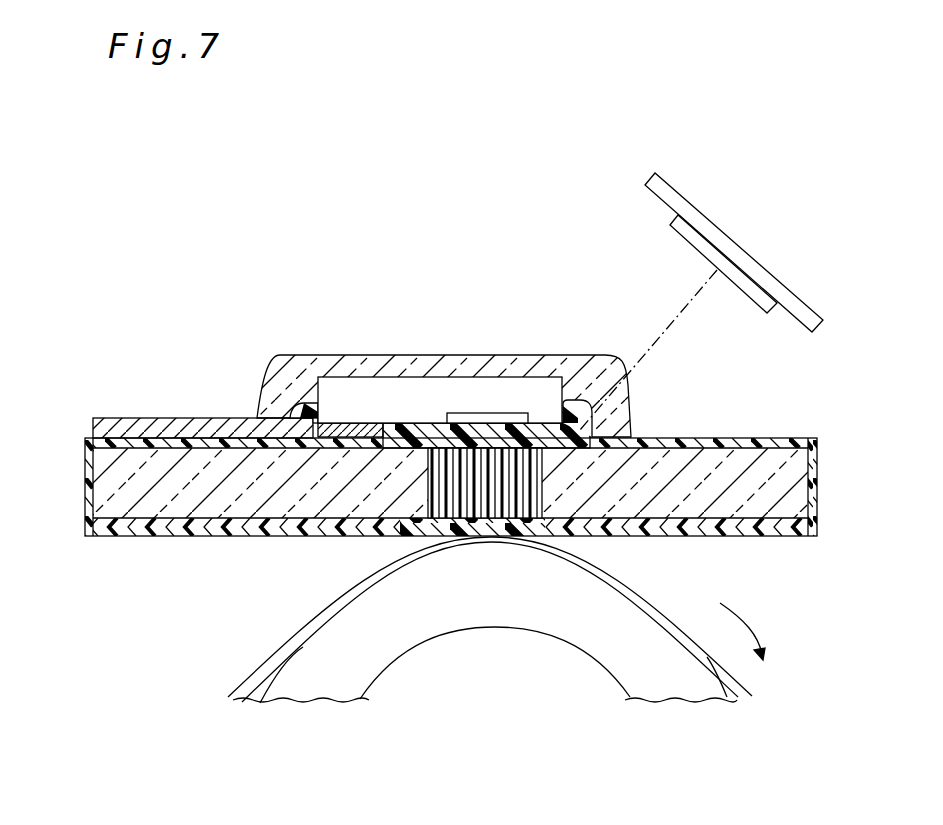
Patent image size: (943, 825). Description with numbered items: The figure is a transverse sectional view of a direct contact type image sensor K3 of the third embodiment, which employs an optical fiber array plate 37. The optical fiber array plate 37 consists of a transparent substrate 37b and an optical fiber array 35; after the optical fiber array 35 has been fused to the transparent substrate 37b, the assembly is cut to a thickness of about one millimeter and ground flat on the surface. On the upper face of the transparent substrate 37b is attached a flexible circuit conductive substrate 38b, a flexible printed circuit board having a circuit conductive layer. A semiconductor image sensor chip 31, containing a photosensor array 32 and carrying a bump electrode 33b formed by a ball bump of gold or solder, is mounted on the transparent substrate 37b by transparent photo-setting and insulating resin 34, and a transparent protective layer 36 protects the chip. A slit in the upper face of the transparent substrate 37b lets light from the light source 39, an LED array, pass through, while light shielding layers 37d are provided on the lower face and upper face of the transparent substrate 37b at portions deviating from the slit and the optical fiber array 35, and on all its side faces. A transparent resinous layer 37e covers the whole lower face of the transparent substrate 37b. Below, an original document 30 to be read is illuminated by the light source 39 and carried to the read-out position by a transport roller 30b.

The direct contact type image sensor K3 is at (378, 254).
The original document 30 is at (632, 577).
The transport roller 30b is at (305, 648).
The semiconductor image sensor chip 31 is at (390, 386).
The photosensor array 32 is at (478, 412).
The bump electrode 33b is at (320, 402).
The transparent photo-setting and insulating resin 34 is at (553, 426).
The optical fiber array 35 is at (414, 428).
The transparent protective layer 36 is at (505, 372).
The optical fiber array plate 37 is at (73, 461).
The transparent substrate 37b is at (792, 495).
The light shielding layers 37d is at (742, 443).
The transparent resinous layer 37e is at (752, 531).
The flexible circuit conductive substrate 38b is at (232, 418).
The light source 39 is at (655, 190).